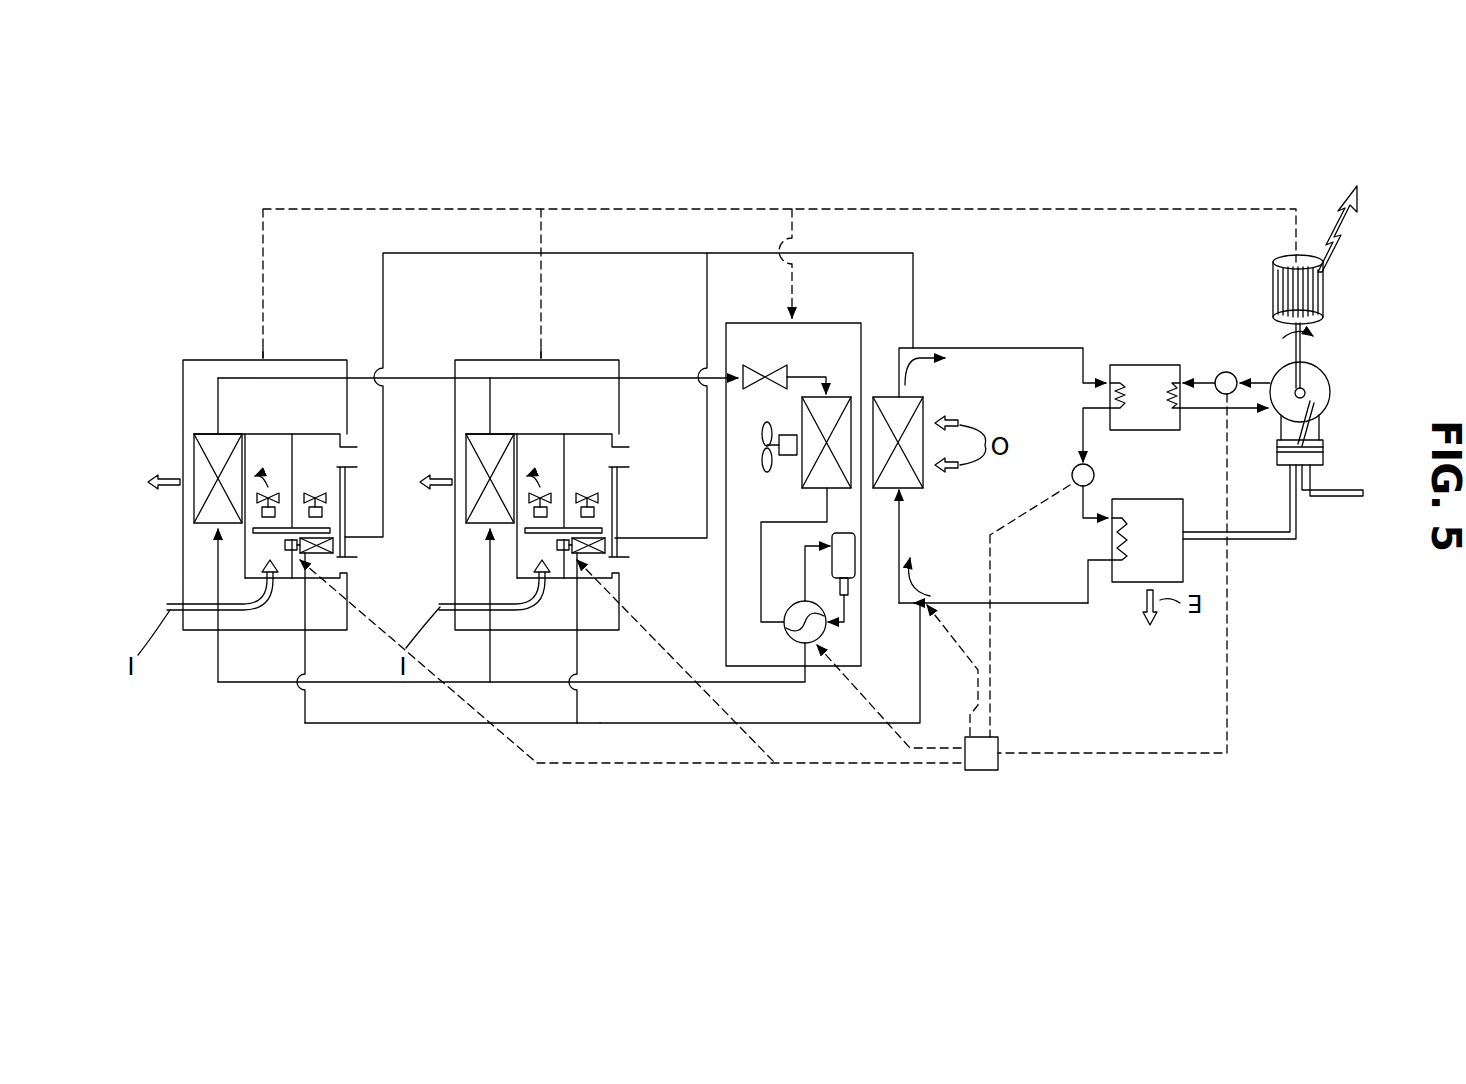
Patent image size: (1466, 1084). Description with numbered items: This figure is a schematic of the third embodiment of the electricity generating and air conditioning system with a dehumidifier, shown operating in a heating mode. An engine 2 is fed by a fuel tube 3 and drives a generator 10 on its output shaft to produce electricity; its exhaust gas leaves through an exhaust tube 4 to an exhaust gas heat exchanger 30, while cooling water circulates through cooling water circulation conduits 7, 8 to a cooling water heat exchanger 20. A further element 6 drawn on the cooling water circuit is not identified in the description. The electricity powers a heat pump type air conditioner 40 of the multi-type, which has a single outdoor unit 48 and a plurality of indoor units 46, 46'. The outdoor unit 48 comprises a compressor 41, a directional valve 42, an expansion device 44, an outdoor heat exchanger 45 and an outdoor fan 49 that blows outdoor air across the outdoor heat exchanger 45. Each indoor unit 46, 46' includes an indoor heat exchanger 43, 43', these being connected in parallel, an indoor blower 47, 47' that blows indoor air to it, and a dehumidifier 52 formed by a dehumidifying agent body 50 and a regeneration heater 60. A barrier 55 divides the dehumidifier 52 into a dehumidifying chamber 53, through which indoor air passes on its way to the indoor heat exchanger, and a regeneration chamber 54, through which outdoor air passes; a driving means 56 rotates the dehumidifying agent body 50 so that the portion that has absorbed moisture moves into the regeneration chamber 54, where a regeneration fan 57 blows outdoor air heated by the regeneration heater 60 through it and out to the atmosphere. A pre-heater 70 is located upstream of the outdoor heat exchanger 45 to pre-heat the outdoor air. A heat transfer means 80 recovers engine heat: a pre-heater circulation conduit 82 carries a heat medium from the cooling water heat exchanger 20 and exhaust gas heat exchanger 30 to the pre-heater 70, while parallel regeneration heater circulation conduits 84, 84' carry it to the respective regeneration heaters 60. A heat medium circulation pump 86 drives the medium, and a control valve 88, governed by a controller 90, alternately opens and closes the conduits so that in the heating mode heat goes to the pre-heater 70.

The engine 2 is at (1333, 393).
The fuel tube 3 is at (1325, 493).
The exhaust tube 4 is at (1290, 542).
The pump 6 is at (1218, 373).
The cooling water circulation conduit 7 is at (1258, 380).
The cooling water circulation conduit 8 is at (1215, 410).
The generator 10 is at (1325, 292).
The cooling water heat exchanger 20 is at (1140, 372).
The exhaust gas heat exchanger 30 is at (1128, 578).
The heat pump type air conditioner 40 is at (455, 762).
The compressor 41 is at (848, 557).
The directional valve 42 is at (795, 642).
The indoor heat exchanger 43 is at (454, 537).
The indoor heat exchanger 43' is at (180, 558).
The expansion device 44 is at (745, 362).
The outdoor heat exchanger 45 is at (817, 410).
The indoor unit 46 is at (534, 454).
The indoor unit 46' is at (261, 454).
The indoor fan 47 is at (514, 480).
The indoor blower 47' is at (240, 480).
The outdoor unit 48 is at (828, 660).
The outdoor fan 49 is at (762, 432).
The dehumidifying agent body 50 is at (335, 530).
The dehumidifier 52 is at (296, 600).
The dehumidifying chamber 53 is at (257, 564).
The regeneration chamber 54 is at (343, 508).
The barrier 55 is at (283, 493).
The driving means 56 is at (285, 545).
The regeneration fan 57 is at (300, 495).
The regeneration heater 60 is at (340, 547).
The pre-heater 70 is at (940, 420).
The heat transfer means 80 is at (1040, 645).
The pre-heater circulation conduit 82 is at (897, 360).
The regeneration heater circulation conduit 84 is at (760, 481).
The regeneration heater circulation conduit 84' is at (609, 482).
The heat medium circulation pump 86 is at (1073, 465).
The control valve 88 is at (948, 592).
The controller 90 is at (985, 765).